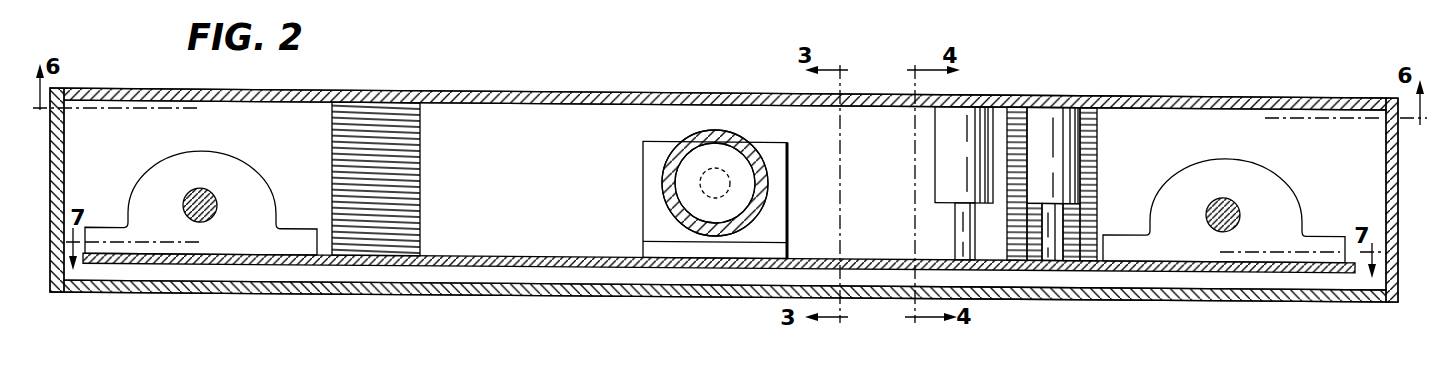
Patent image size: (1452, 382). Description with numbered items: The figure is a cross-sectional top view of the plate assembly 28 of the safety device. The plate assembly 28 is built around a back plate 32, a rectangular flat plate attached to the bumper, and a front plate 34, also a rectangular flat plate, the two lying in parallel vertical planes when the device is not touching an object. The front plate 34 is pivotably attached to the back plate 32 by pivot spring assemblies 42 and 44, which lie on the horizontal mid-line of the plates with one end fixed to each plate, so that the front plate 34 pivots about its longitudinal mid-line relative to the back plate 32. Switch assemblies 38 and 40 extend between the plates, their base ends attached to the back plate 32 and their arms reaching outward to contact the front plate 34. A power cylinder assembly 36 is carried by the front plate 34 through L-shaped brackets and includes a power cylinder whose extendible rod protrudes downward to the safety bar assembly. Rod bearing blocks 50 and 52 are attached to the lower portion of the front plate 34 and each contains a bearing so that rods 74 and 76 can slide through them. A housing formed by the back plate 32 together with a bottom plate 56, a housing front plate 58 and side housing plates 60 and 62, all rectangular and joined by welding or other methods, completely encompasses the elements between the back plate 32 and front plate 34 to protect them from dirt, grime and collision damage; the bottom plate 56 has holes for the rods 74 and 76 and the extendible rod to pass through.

The plate assembly 28 is at (548, 78).
The back plate 32 is at (510, 104).
The front plate 34 is at (548, 256).
The power cylinder assembly 36 is at (767, 183).
The switch assembly 38 is at (942, 175).
The switch assembly 40 is at (1067, 158).
The pivot spring assembly 42 is at (420, 183).
The pivot spring assembly 44 is at (1098, 208).
The rod bearing block 50 is at (240, 175).
The rod bearing block 52 is at (1267, 182).
The bottom plate 56 is at (577, 190).
The front plate 58 is at (470, 290).
The side housing plate 60 is at (52, 240).
The side housing plate 62 is at (1398, 192).
The rod 74 is at (185, 215).
The rod 76 is at (1232, 220).